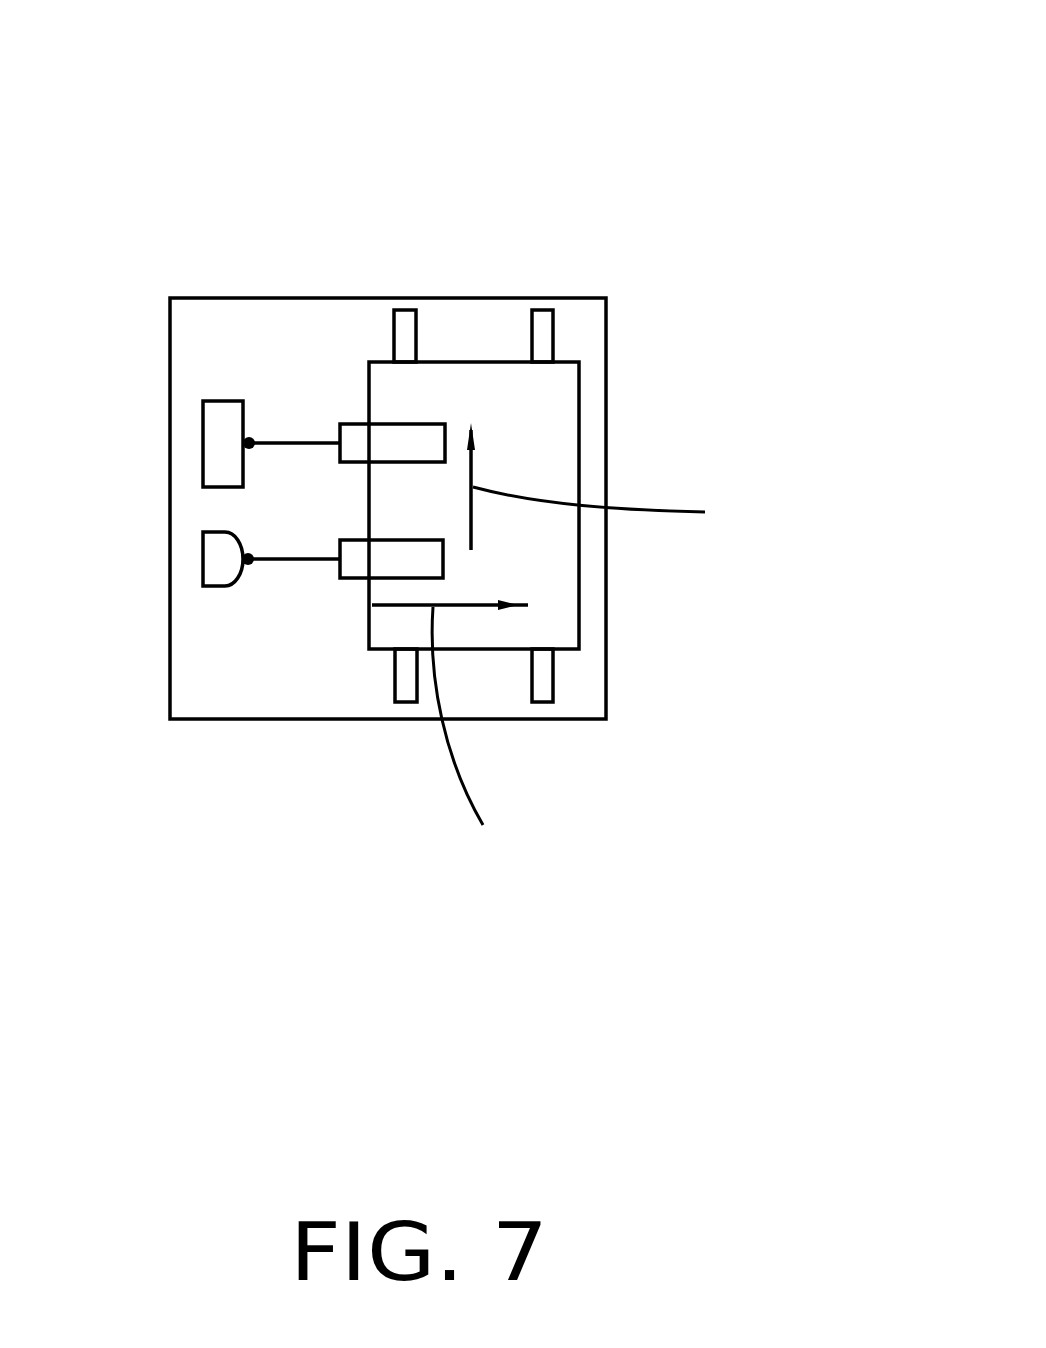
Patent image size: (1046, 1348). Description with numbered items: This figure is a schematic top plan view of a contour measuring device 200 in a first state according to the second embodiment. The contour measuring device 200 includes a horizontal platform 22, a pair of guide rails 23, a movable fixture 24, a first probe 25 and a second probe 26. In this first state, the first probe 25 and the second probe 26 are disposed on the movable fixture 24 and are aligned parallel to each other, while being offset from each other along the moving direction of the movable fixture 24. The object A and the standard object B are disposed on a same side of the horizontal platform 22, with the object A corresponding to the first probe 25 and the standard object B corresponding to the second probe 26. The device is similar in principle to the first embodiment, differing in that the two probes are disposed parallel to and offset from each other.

The contour measuring device 200 is at (445, 50).
The horizontal platform 22 is at (230, 335).
The guide rails 23 is at (405, 322).
The movable fixture 24 is at (558, 468).
The first probe 25 is at (360, 563).
The second probe 26 is at (357, 440).
The object A is at (217, 563).
The standard object B is at (215, 440).